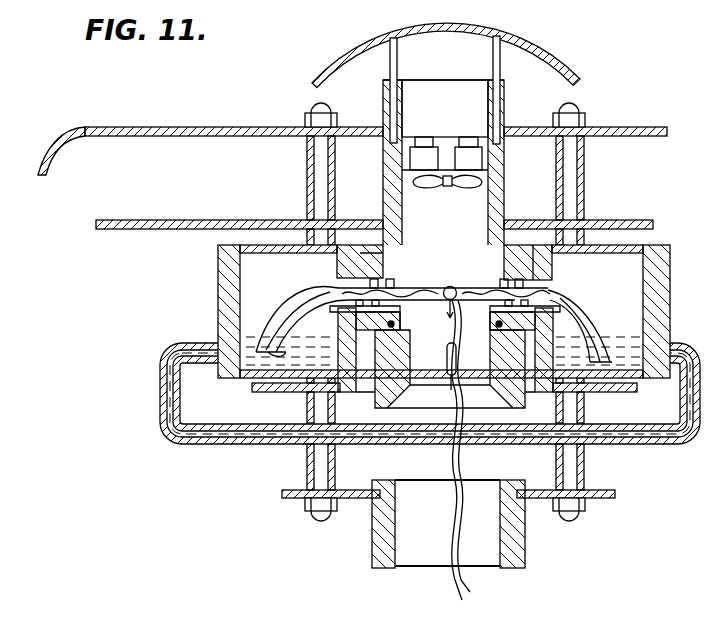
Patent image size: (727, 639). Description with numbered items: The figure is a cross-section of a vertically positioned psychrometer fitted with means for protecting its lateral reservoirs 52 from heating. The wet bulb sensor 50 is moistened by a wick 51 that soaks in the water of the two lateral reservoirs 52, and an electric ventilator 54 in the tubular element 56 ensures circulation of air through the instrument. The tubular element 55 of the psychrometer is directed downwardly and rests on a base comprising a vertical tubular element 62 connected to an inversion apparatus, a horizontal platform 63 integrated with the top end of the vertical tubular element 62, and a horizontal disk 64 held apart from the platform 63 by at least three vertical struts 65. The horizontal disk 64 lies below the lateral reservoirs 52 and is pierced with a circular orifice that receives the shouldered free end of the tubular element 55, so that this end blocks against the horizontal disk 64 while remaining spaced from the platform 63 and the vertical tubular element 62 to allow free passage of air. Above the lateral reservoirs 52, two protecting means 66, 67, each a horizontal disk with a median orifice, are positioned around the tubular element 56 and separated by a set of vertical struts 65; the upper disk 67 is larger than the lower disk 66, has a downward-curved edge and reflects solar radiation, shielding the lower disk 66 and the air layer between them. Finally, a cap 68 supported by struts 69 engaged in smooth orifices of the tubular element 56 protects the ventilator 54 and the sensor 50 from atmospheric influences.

The sensor 50 is at (453, 287).
The wick 51 is at (435, 288).
The lateral reservoirs 52 is at (218, 281).
The electric ventilator 54 is at (462, 150).
The tubular element 55 is at (386, 397).
The tubular element 56 is at (387, 182).
The vertical tubular element 62 is at (382, 543).
The horizontal platform 63 is at (298, 498).
The horizontal disk 64 is at (264, 396).
The vertical struts 65 is at (318, 455).
The protecting means 66 is at (203, 220).
The protecting means 67 is at (130, 126).
The cap 68 is at (337, 66).
The struts 69 is at (385, 61).